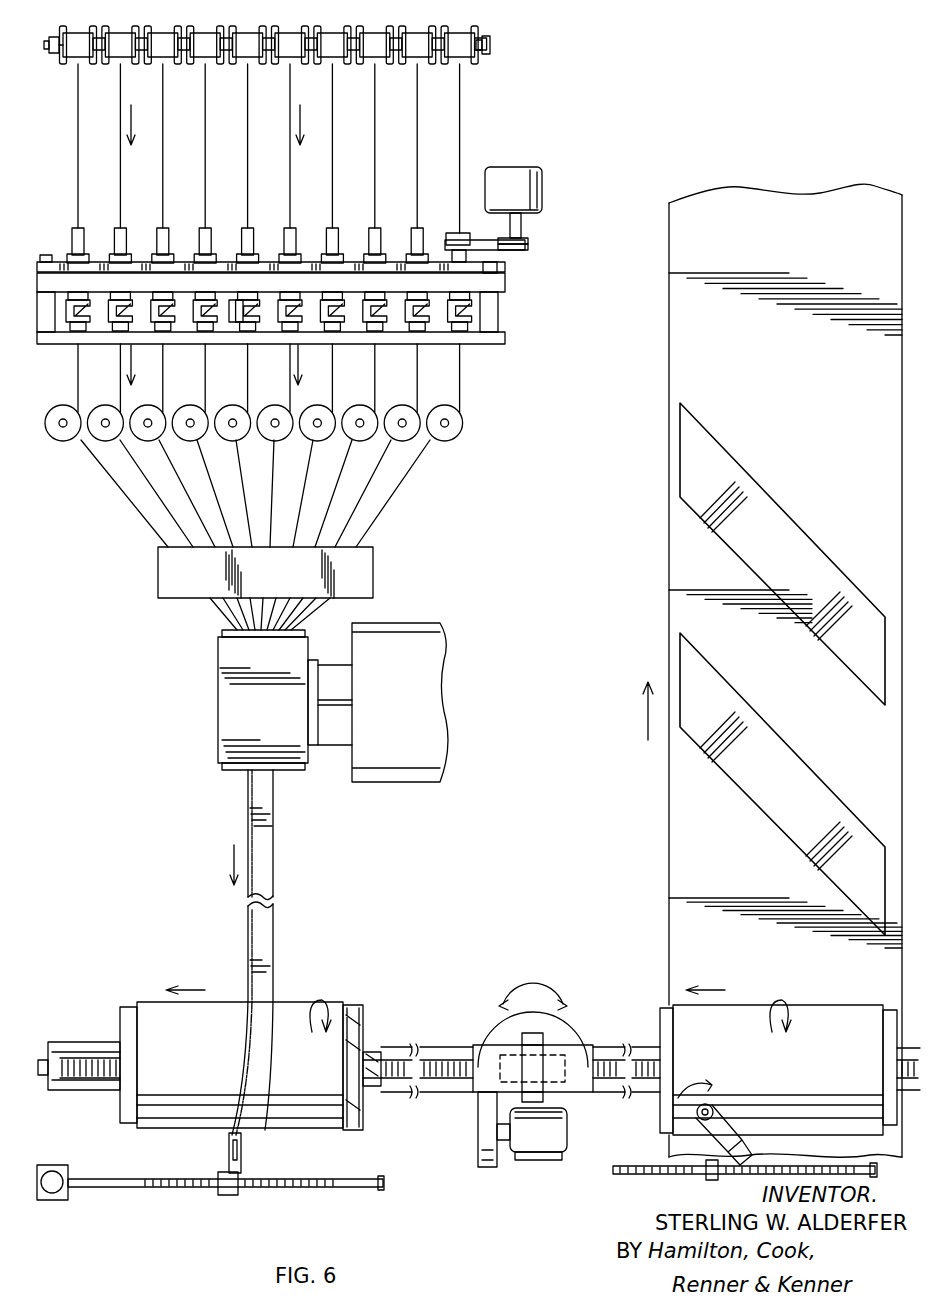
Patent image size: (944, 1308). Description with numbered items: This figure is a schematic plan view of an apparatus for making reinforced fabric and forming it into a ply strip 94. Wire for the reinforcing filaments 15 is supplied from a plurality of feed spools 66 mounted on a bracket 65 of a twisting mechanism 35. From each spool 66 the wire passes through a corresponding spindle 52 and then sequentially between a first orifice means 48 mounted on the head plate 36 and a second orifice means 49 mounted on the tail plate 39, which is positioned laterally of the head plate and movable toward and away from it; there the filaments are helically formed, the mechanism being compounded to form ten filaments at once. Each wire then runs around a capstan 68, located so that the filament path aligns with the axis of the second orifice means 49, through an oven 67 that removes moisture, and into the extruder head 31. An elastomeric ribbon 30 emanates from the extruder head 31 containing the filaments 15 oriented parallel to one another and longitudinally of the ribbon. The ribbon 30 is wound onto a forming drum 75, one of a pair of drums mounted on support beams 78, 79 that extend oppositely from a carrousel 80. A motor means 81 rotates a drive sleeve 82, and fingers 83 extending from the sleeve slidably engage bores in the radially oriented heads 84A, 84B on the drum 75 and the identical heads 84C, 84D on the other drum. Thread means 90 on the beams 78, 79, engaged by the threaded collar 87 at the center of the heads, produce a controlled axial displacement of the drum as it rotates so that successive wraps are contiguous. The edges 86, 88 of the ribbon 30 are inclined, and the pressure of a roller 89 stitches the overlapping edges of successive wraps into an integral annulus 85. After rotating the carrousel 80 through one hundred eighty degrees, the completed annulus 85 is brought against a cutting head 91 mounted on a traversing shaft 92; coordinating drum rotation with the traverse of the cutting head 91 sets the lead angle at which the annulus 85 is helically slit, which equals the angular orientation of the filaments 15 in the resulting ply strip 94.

The filaments 15 is at (160, 495).
The elastomeric ribbon 30 is at (263, 862).
The extruder head 31 is at (226, 700).
The twisting mechanism 35 is at (322, 272).
The head plate 36 is at (494, 282).
The tail plate 39 is at (226, 336).
The first orifice means 48 is at (478, 313).
The second orifice means 49 is at (468, 340).
The spindle 52 is at (416, 240).
The bracket 65 is at (491, 41).
The feed spools 66 is at (98, 68).
The oven 67 is at (157, 573).
The capstan 68 is at (412, 410).
The forming drum 75 is at (348, 1008).
The support beam 78 is at (462, 1044).
The support beam 79 is at (606, 1046).
The carrousel 80 is at (580, 1010).
The motor means 81 is at (540, 1150).
The drive sleeve 82 is at (578, 1110).
The fingers 83 is at (412, 1046).
The head 84A is at (362, 1128).
The head 84B is at (118, 1125).
The head 84C is at (655, 1010).
The head 84D is at (903, 1012).
The annulus 85 is at (222, 1000).
The edge 86 is at (247, 926).
The threaded collar 87 is at (378, 1050).
The edge 88 is at (277, 922).
The roller 89 is at (225, 1145).
The thread means 90 is at (393, 1080).
The cutting head 91 is at (724, 1100).
The traversing shaft 92 is at (640, 1176).
The ply strip 94 is at (672, 446).